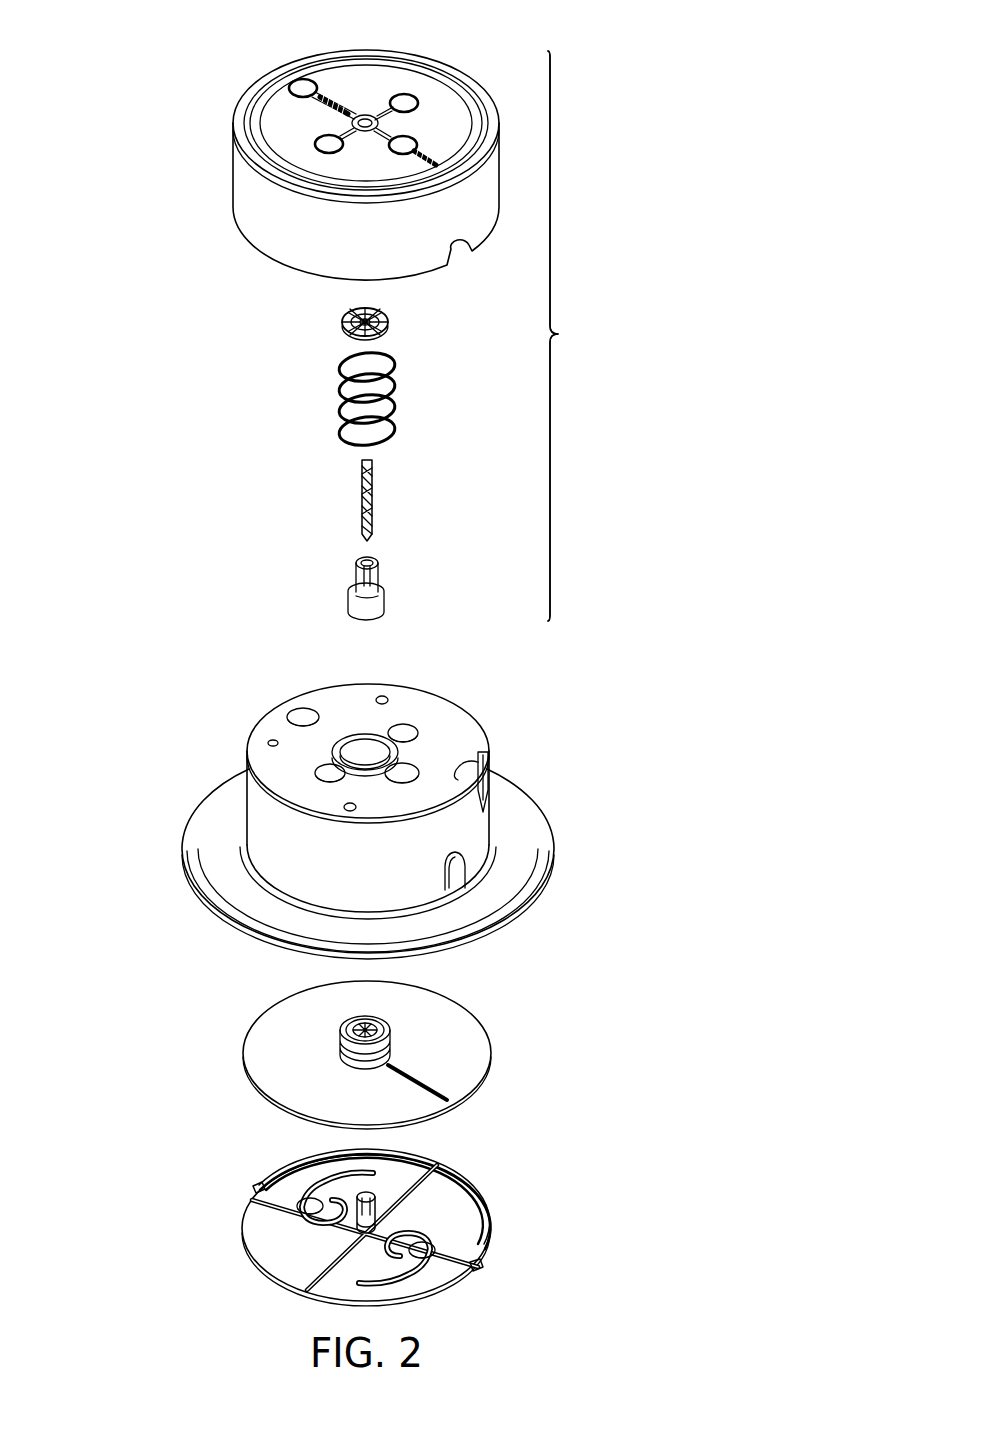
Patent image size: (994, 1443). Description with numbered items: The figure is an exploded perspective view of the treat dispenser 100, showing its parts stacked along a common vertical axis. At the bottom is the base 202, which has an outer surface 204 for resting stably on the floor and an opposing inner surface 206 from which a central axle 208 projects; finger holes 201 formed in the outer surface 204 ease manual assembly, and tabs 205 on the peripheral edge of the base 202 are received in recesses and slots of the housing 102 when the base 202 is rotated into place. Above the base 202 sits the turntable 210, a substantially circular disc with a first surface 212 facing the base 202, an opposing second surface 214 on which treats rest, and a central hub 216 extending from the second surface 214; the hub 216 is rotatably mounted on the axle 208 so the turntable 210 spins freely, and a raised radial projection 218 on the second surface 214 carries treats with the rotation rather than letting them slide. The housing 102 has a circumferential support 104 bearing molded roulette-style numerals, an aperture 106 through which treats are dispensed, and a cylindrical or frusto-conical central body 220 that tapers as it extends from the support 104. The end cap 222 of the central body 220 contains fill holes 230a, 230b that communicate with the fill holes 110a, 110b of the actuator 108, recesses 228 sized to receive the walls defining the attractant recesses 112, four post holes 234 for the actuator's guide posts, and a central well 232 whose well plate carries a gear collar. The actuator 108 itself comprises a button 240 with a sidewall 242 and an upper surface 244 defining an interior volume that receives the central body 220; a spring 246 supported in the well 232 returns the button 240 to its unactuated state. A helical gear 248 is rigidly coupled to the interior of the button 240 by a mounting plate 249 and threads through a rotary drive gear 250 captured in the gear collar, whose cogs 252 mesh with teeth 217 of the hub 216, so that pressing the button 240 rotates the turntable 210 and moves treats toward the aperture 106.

The treat dispenser 100 is at (716, 187).
The housing 102 is at (170, 686).
The support 104 is at (182, 858).
The aperture 106 is at (457, 878).
The actuator 108 is at (558, 334).
The fill hole 110a is at (302, 83).
The fill hole 110b is at (416, 147).
The recesses 112 is at (400, 102).
The finger holes 201 is at (307, 1202).
The base 202 is at (506, 1170).
The outer surface 204 is at (267, 1277).
The tabs 205 is at (258, 1183).
The inner surface 206 is at (262, 1230).
The central axle 208 is at (371, 1213).
The turntable 210 is at (216, 1020).
The first surface 212 is at (270, 1103).
The second surface 214 is at (472, 1042).
The central hub 216 is at (345, 1027).
The teeth 217 is at (368, 1024).
The projection 218 is at (418, 1080).
The central body 220 is at (245, 795).
The end cap 222 is at (464, 760).
The recesses 228 is at (406, 724).
The fill hole 230a is at (290, 707).
The fill hole 230b is at (427, 764).
The central well 232 is at (354, 742).
The post holes 234 is at (381, 694).
The button 240 is at (228, 162).
The sidewall 242 is at (245, 213).
The upper surface 244 is at (263, 115).
The spring 246 is at (338, 372).
The helical gear 248 is at (360, 497).
The mounting plate 249 is at (339, 322).
The rotary drive gear 250 is at (356, 568).
The cogs 252 is at (350, 613).